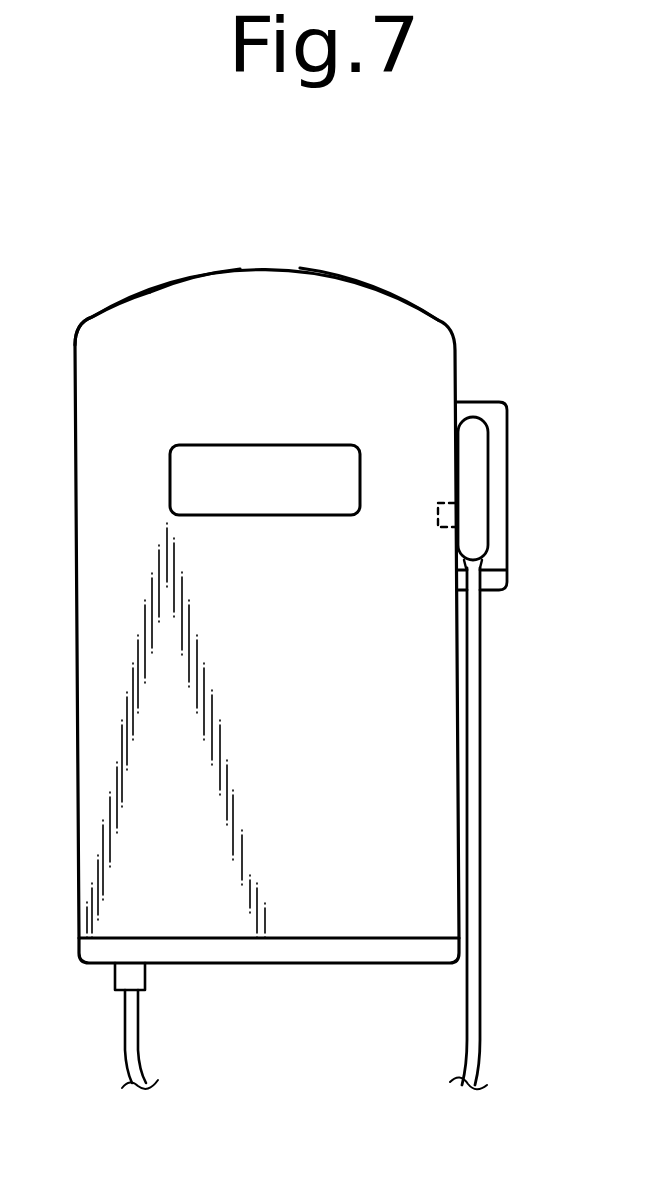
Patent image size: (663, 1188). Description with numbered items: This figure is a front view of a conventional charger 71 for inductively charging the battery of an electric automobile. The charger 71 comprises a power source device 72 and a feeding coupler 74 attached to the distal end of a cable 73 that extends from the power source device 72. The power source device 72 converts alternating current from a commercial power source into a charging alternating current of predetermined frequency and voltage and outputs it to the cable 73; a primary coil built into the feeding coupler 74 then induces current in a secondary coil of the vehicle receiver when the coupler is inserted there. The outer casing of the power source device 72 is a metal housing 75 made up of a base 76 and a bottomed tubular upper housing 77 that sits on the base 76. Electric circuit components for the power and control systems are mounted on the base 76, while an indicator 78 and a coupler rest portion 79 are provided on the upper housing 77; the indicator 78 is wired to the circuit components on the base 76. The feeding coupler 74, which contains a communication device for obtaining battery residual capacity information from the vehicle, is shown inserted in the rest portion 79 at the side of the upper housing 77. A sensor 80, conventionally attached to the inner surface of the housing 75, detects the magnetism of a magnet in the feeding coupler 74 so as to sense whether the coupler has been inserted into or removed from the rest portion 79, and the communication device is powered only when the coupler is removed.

The charger 71 is at (270, 262).
The power source device 72 is at (345, 276).
The cable 73 is at (484, 1013).
The feeding coupler 74 is at (474, 493).
The housing 75 is at (120, 296).
The base 76 is at (278, 950).
The upper housing 77 is at (188, 292).
The indicator 78 is at (268, 495).
The coupler rest portion 79 is at (478, 402).
The sensor 80 is at (438, 503).